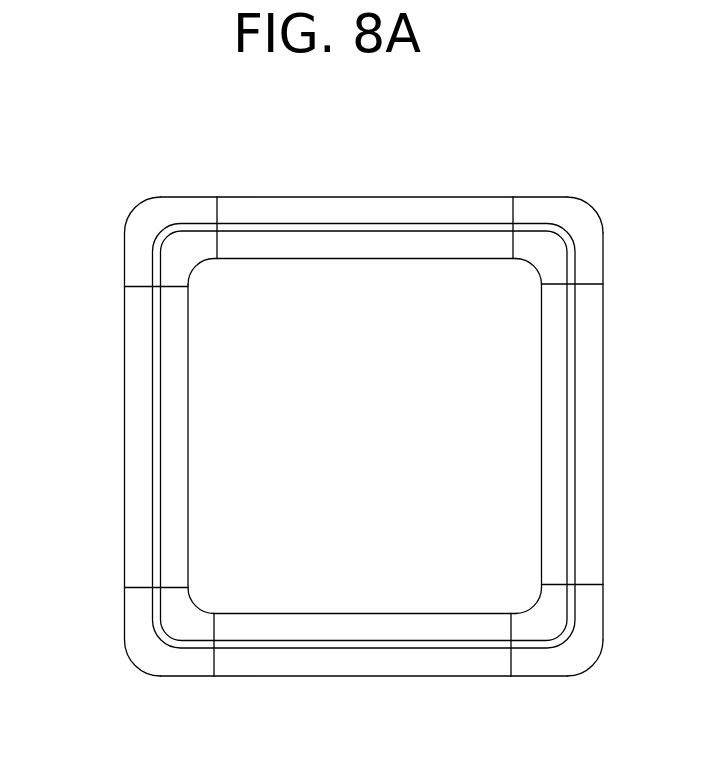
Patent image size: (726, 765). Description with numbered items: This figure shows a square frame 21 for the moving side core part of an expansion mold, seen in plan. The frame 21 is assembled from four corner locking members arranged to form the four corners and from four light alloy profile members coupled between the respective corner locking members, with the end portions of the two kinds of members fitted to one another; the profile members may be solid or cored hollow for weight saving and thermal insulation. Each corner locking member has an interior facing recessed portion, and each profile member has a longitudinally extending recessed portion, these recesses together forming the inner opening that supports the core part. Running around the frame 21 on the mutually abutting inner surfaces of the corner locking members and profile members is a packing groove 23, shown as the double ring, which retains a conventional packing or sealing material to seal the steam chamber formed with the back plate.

The frame 21 is at (611, 181).
The packing groove 23 is at (573, 323).